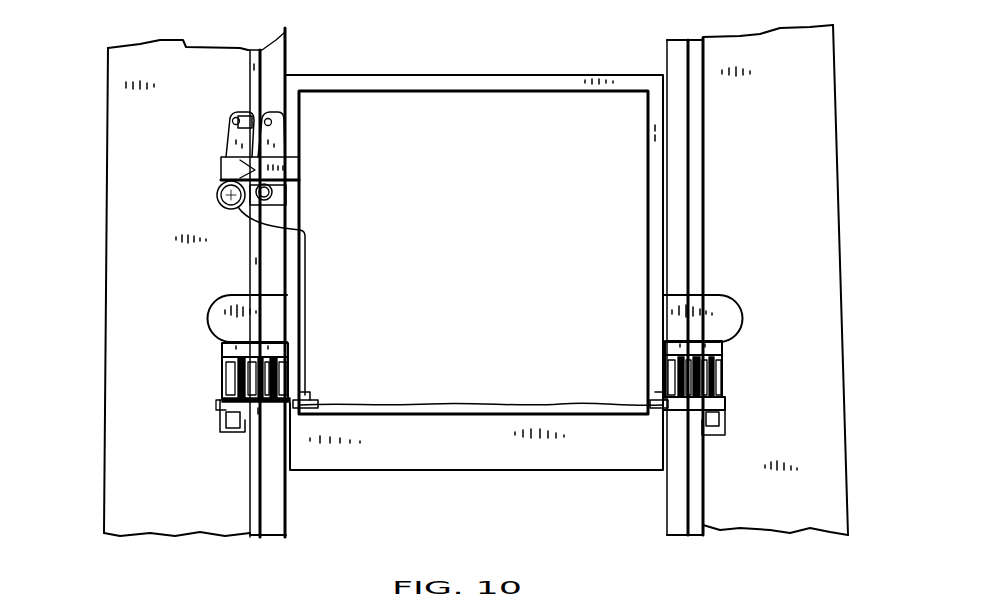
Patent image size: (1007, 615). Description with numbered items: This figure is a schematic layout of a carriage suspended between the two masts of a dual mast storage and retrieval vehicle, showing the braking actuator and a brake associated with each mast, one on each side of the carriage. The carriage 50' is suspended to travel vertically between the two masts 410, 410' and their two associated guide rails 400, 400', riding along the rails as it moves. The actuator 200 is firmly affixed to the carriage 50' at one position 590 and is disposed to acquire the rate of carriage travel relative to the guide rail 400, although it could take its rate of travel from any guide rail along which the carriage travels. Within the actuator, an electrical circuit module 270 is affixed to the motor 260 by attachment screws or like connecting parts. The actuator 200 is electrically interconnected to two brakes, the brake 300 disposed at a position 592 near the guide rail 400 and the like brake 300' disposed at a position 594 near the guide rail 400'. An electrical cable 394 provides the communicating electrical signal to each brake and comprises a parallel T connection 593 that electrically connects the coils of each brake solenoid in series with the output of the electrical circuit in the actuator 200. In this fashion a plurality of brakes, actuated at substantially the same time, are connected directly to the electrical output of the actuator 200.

The mast 410 is at (142, 288).
The mast 410' is at (800, 280).
The guide rail 400 is at (302, 278).
The guide rail 400' is at (704, 268).
The carriage 50' is at (474, 243).
The position 590 is at (285, 148).
The actuator 200 is at (299, 168).
The motor 260 is at (217, 195).
The electrical circuit module 270 is at (238, 205).
The electrical cable 394 is at (307, 313).
The brake 300 is at (160, 363).
The brake 300' is at (781, 365).
The position 592 is at (290, 372).
The parallel T connection 593 is at (318, 395).
The position 594 is at (664, 394).